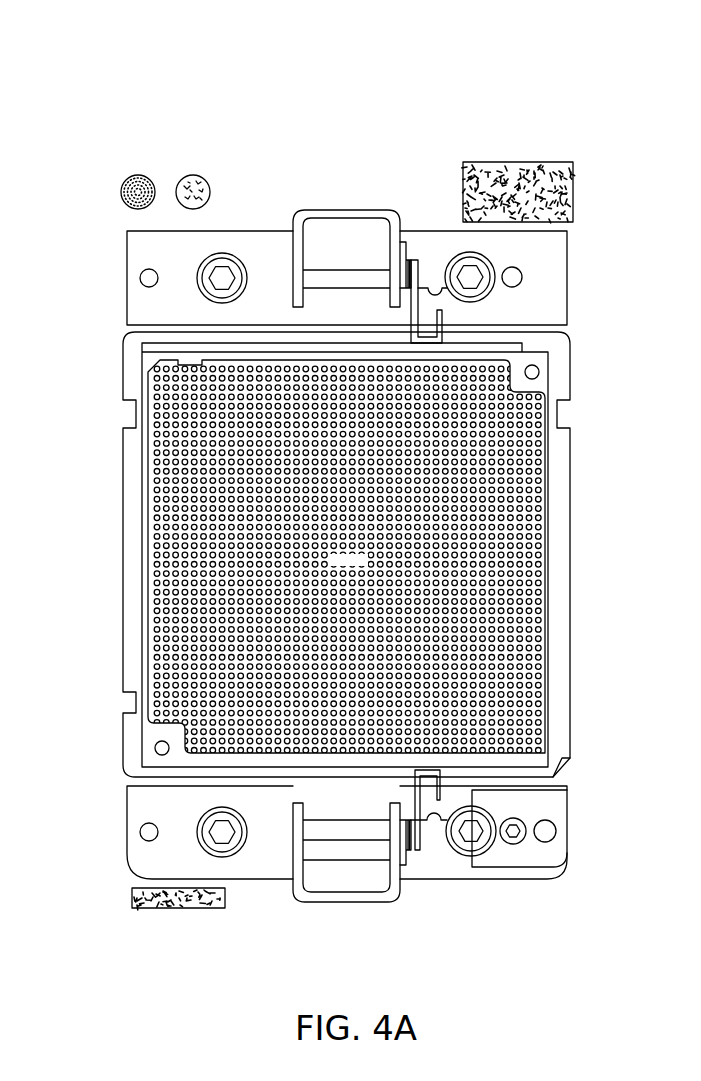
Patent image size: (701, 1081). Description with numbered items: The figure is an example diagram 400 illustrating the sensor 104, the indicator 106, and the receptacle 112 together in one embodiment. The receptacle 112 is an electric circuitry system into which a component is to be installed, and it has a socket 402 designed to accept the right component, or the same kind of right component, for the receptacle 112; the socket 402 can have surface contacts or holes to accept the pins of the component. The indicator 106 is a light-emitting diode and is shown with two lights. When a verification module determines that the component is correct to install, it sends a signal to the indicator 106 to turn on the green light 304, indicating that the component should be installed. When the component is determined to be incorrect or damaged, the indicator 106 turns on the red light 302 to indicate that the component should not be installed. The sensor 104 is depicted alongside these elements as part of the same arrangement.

The example diagram 400 is at (512, 52).
The indicator 106 is at (155, 133).
The red light 302 is at (121, 191).
The green light 304 is at (211, 187).
The sensor 104 is at (463, 179).
The receptacle 112 is at (133, 441).
The socket 402 is at (177, 513).